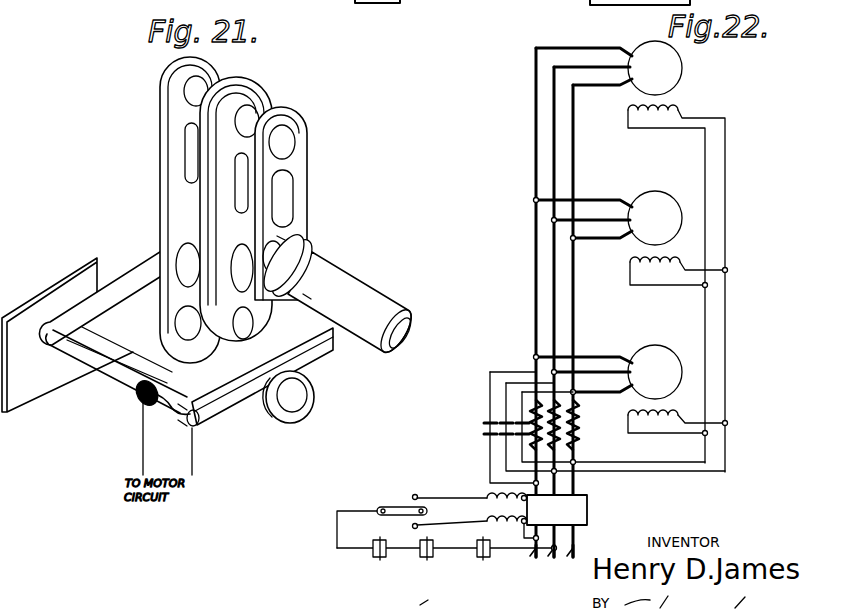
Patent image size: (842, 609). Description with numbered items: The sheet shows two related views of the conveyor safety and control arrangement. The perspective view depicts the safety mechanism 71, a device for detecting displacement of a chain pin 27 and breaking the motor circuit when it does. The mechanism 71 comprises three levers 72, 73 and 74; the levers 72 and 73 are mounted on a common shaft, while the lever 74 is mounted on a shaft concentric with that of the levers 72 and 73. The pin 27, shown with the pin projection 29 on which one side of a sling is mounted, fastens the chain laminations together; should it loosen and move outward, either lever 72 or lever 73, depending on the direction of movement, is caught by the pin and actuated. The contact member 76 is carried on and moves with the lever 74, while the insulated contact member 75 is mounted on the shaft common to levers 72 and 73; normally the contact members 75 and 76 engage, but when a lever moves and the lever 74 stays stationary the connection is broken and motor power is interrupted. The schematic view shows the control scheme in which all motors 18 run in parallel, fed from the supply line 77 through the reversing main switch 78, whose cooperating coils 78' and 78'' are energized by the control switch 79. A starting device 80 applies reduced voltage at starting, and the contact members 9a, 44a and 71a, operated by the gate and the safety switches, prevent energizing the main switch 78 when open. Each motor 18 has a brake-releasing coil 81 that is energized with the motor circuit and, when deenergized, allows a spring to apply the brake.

In FIG. 21, the mechanism 71 is at (98, 396).
In FIG. 21, the lever 72 is at (120, 291).
In FIG. 21, the projections 29 is at (357, 292).
In FIG. 21, the lever 73 is at (262, 376).
In FIG. 21, the lever 74 is at (150, 371).
In FIG. 21, the pin 27 is at (302, 397).
In FIG. 21, the contact member 75 is at (145, 399).
In FIG. 21, the contact member 76 is at (175, 421).
In FIG. 22, the motors 18 is at (665, 79).
In FIG. 22, the operating coil 81 is at (627, 108).
In FIG. 22, the starting device 80 is at (478, 439).
In FIG. 22, the main switch 78 is at (557, 510).
In FIG. 22, the operating coil 78' is at (470, 487).
In FIG. 22, the operating coil 78'' is at (476, 531).
In FIG. 22, the control switch 79 is at (393, 507).
In FIG. 22, the contact member 44a is at (380, 560).
In FIG. 22, the contact member 71a is at (427, 560).
In FIG. 22, the contact member 9a is at (483, 560).
In FIG. 22, the supply line 77 is at (557, 552).